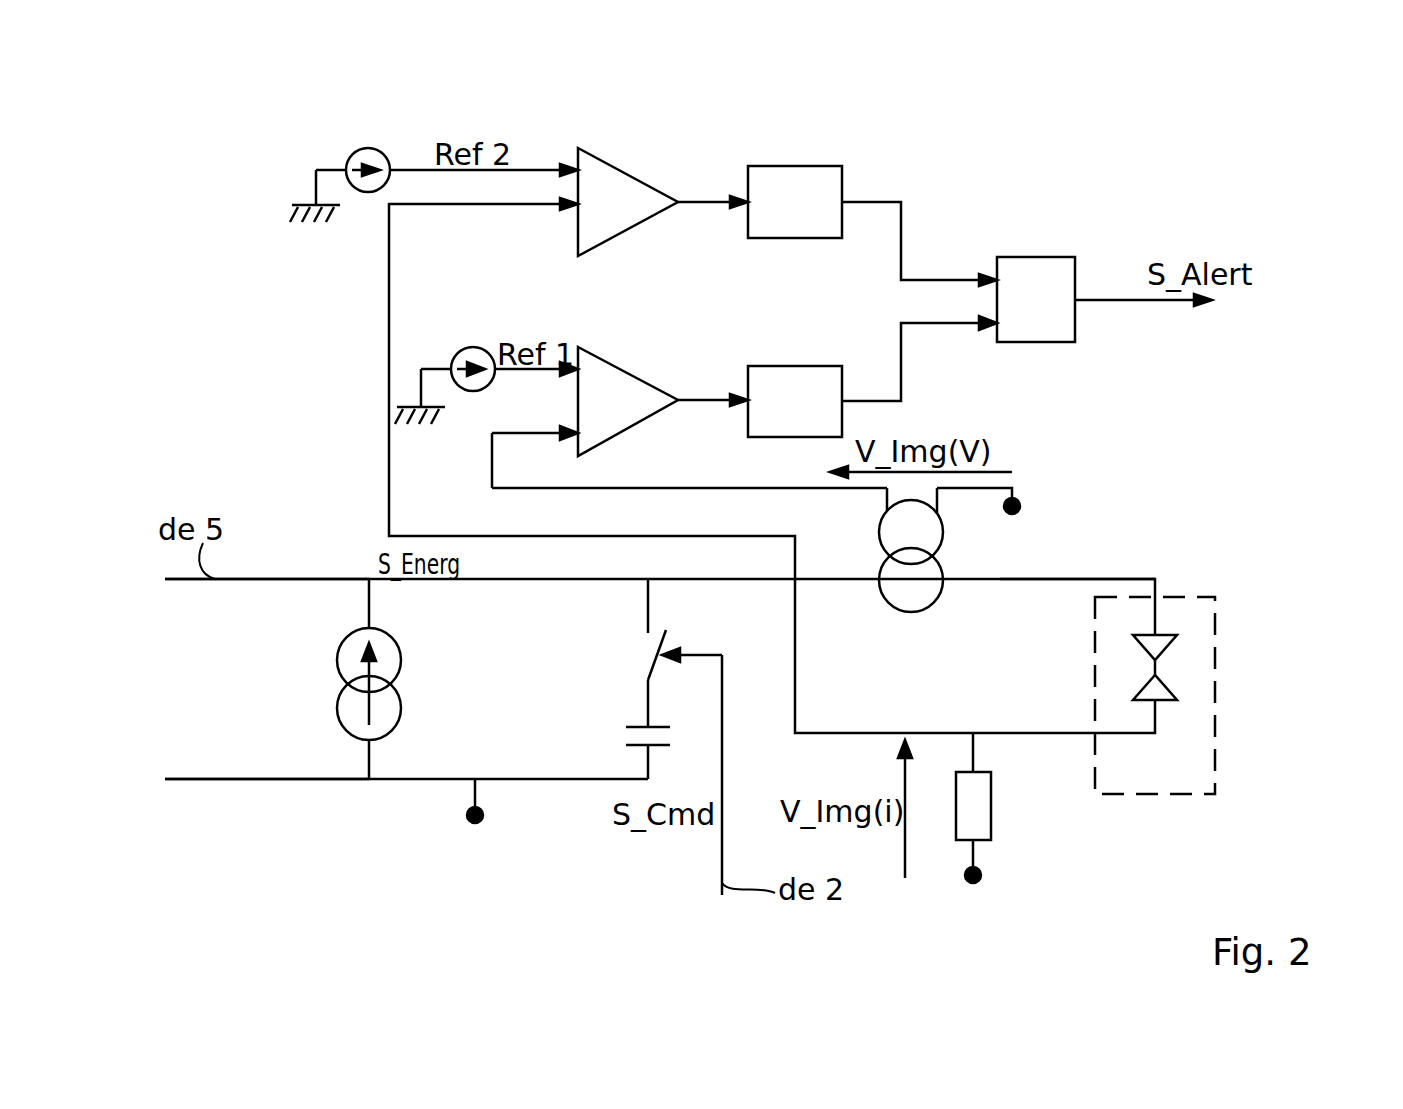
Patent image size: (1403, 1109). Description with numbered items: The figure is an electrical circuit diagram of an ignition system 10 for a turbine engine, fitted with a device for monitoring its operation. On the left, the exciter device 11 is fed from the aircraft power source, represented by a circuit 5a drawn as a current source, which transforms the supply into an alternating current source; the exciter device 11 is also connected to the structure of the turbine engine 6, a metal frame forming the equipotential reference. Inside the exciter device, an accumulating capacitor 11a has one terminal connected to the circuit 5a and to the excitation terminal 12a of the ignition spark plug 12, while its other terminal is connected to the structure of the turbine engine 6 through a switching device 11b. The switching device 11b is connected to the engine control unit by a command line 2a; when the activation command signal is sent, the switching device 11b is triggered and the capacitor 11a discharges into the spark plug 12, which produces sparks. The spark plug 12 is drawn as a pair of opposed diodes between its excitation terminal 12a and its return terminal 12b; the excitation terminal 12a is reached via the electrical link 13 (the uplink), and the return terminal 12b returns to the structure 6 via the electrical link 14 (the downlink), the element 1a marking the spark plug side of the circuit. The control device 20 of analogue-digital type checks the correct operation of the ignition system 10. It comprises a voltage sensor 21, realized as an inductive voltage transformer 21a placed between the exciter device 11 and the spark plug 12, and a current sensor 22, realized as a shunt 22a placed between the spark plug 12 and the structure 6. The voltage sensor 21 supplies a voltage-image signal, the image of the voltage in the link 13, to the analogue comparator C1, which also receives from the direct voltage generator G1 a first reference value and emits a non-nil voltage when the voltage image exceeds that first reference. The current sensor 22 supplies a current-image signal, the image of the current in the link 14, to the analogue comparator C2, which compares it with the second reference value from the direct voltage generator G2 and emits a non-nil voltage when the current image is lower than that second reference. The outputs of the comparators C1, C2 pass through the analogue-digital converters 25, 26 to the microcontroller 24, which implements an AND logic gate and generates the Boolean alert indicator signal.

The ignition system 10 is at (333, 825).
The circuit 5a is at (337, 706).
The structure of the turbine engine 6 is at (482, 822).
The exciter device 11 is at (474, 677).
The accumulating capacitor 11a is at (662, 745).
The switching device 11b is at (648, 665).
The command line 2a is at (722, 755).
The electrical link 13 is at (1130, 578).
The ignition spark plug 12 is at (1241, 598).
The excitation terminal 12a is at (1163, 635).
The return terminal 12b is at (1170, 695).
The electrical link 14 is at (1155, 695).
The protected load 1a is at (1213, 695).
The control device 20 is at (1150, 470).
The voltage sensor 21 is at (783, 581).
The voltage transformer 21a is at (918, 598).
The current sensor 22 is at (1052, 810).
The shunt 22a is at (992, 833).
The microcontroller 24 is at (1060, 257).
The analogue-digital converter 25 is at (803, 366).
The analogue-digital converter 26 is at (815, 166).
The direct voltage generator G1 is at (470, 347).
The direct voltage generator G2 is at (368, 148).
The analogue comparator C1 is at (627, 370).
The analogue comparator C2 is at (617, 163).